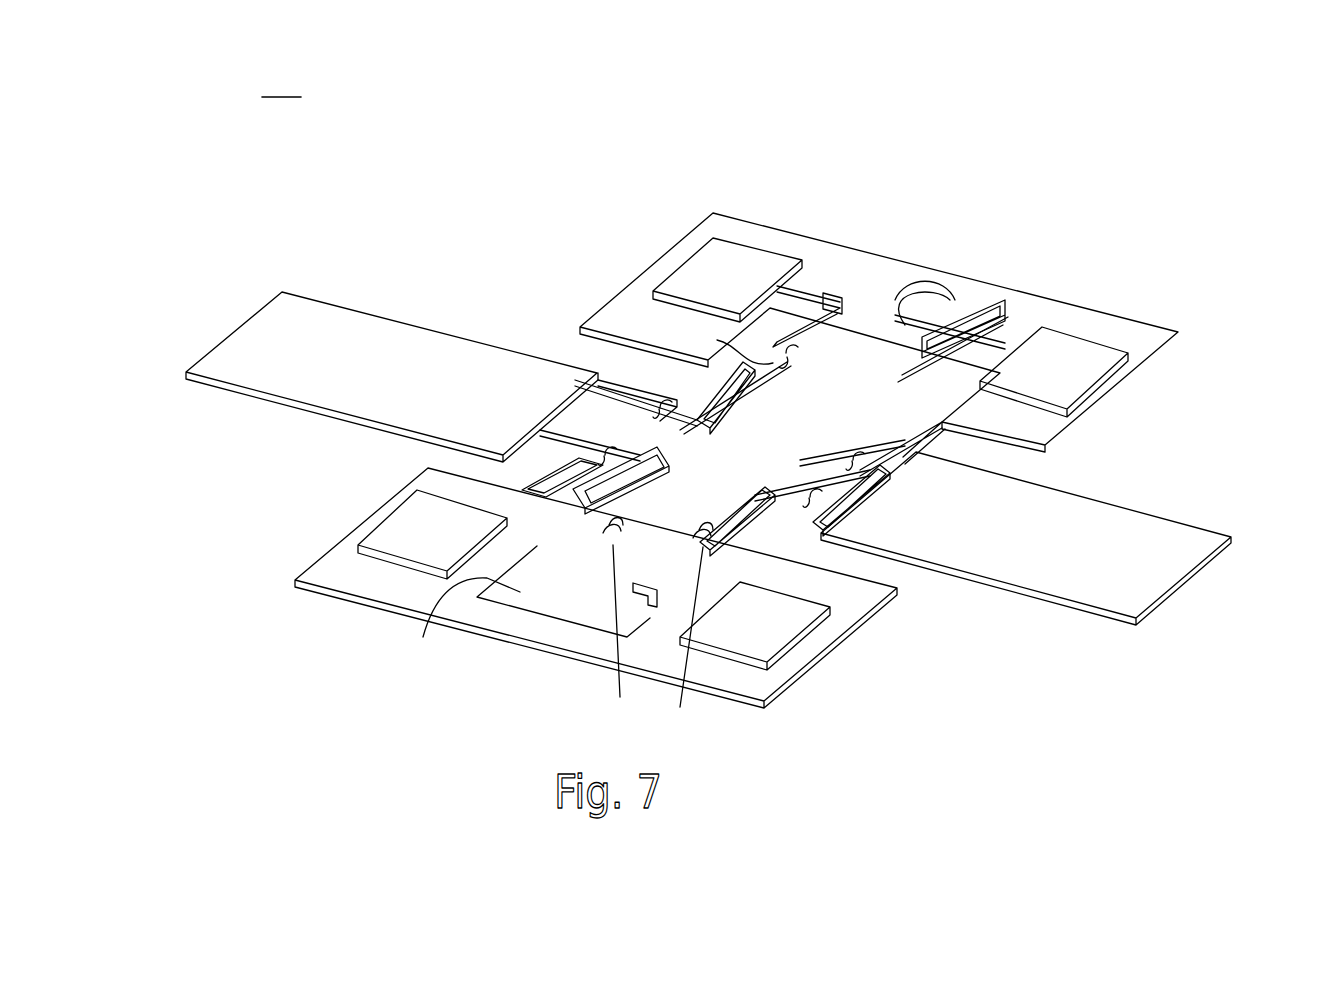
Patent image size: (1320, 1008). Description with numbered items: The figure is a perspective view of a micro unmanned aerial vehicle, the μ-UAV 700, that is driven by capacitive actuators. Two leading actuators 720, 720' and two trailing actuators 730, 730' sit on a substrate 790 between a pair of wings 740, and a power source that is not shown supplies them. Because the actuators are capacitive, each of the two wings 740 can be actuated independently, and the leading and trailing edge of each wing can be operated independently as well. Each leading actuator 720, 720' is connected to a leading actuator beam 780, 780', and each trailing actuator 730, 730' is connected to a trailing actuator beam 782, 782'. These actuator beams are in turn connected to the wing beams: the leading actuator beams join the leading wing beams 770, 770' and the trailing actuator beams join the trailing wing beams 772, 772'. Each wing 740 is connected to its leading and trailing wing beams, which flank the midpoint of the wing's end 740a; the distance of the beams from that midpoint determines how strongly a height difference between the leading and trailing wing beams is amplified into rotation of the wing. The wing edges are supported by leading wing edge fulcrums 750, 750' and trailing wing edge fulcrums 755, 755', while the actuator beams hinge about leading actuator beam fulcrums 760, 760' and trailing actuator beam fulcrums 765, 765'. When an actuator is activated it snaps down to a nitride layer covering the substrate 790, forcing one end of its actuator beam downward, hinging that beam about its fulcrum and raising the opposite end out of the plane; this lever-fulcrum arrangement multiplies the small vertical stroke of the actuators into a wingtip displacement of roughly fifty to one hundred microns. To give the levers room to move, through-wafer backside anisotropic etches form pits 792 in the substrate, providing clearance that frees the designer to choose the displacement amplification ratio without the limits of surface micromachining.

The μ-UAV 700 is at (281, 84).
The leading actuator 720 is at (568, 588).
The leading actuator 720' is at (823, 631).
The trailing actuator 730 is at (703, 245).
The trailing actuator 730' is at (1085, 327).
The wing 740 is at (333, 328).
The wing's end 740a is at (546, 454).
The leading wing edge fulcrum 750 is at (562, 419).
The leading wing edge fulcrum 750' is at (856, 494).
The trailing wing edge fulcrum 755 is at (603, 372).
The trailing wing edge fulcrum 755' is at (822, 464).
The leading actuator beam fulcrum 760 is at (620, 621).
The leading actuator beam fulcrum 760' is at (673, 630).
The trailing actuator beam fulcrum 765 is at (819, 292).
The trailing actuator beam fulcrum 765' is at (1006, 312).
The leading wing beam 770 is at (561, 476).
The leading wing beam 770' is at (895, 548).
The trailing wing beam 772 is at (739, 405).
The trailing wing beam 772' is at (994, 452).
The leading actuator beam 780 is at (612, 533).
The leading actuator beam 780' is at (723, 521).
The trailing actuator beam 782 is at (749, 403).
The trailing actuator beam 782' is at (930, 334).
The substrate 790 is at (613, 317).
The pits 792 is at (902, 318).